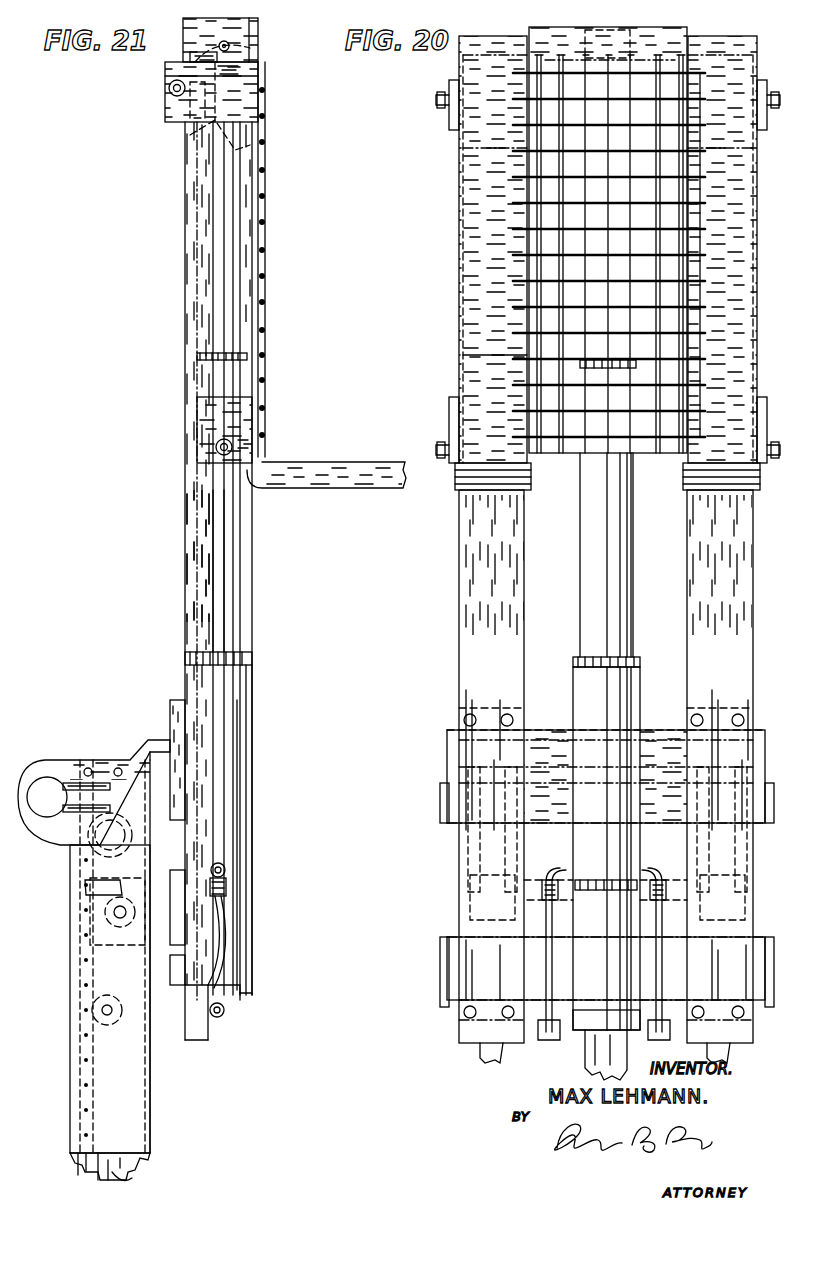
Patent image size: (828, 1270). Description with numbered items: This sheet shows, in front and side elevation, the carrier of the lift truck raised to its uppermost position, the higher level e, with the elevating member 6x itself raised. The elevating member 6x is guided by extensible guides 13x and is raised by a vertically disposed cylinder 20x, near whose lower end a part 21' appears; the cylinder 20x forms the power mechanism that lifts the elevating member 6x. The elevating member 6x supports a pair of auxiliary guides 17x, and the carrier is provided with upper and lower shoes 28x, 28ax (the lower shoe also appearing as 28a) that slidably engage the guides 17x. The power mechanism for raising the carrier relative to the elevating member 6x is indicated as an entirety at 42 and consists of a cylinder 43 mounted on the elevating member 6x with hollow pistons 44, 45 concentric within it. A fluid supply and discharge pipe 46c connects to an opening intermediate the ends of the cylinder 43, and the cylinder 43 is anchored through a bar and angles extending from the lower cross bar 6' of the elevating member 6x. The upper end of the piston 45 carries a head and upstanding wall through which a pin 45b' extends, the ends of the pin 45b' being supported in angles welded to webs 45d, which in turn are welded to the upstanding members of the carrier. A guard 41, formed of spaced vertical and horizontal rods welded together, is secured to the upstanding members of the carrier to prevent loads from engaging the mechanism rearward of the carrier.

In FIG. 21, the pin 45b' is at (252, 40).
In FIG. 21, the lower shoe 28a is at (165, 115).
In FIG. 21, the webs 45d is at (190, 150).
In FIG. 20, the webs 45d is at (700, 82).
In FIG. 21, the hollow piston 45 is at (230, 297).
In FIG. 20, the hollow piston 45 is at (598, 297).
In FIG. 21, the guard 41 is at (265, 208).
In FIG. 20, the guard 41 is at (700, 228).
In FIG. 21, the lower shoe 28ax is at (197, 430).
In FIG. 20, the lower shoe 28ax is at (449, 418).
In FIG. 21, the higher level e is at (343, 462).
In FIG. 20, the higher level e is at (470, 356).
In FIG. 21, the hollow piston 44 is at (232, 600).
In FIG. 20, the hollow piston 44 is at (617, 562).
In FIG. 21, the auxiliary guides 17x is at (186, 602).
In FIG. 20, the auxiliary guides 17x is at (762, 565).
In FIG. 21, the power mechanism for raising the carrier 42 is at (296, 781).
In FIG. 21, the cylinder 43 is at (238, 857).
In FIG. 20, the cylinder 43 is at (584, 840).
In FIG. 21, the elevating member 6x is at (160, 726).
In FIG. 20, the elevating member 6x is at (676, 723).
In FIG. 21, the extensible guides 13x is at (128, 1076).
In FIG. 21, the cylinder 20x is at (150, 1156).
In FIG. 20, the cylinder 20x is at (585, 1060).
In FIG. 21, the stop 21' is at (157, 1169).
In FIG. 21, the fluid supply and discharge pipe 46c is at (226, 975).
In FIG. 20, the fluid supply and discharge pipe 46c is at (670, 862).
In FIG. 20, the upper shoe 28x is at (449, 115).
In FIG. 20, the lower cross bar 6' is at (592, 964).